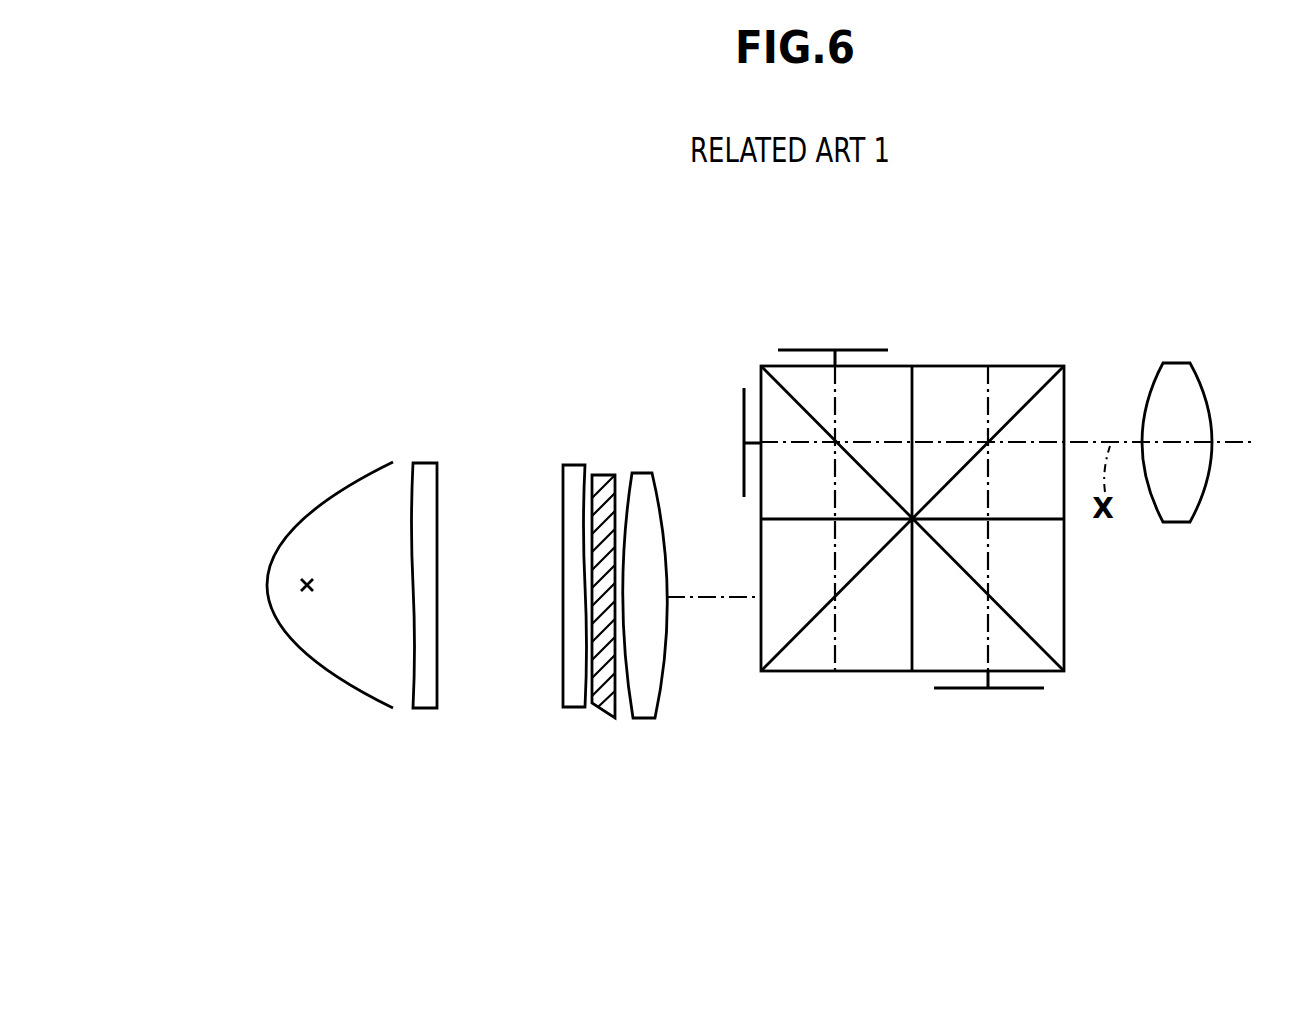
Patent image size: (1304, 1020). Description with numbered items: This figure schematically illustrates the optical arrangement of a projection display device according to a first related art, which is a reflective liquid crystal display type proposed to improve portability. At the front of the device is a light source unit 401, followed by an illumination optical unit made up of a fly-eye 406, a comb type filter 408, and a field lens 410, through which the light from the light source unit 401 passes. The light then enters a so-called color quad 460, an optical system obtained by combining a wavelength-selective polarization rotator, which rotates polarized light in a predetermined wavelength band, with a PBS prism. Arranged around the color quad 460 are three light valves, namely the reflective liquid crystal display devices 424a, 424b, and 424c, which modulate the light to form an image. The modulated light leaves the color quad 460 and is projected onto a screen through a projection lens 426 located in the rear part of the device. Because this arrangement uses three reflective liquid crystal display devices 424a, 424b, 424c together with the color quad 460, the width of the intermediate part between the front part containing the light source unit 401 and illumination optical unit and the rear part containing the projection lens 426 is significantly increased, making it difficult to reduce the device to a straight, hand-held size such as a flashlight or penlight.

The light source unit 401 is at (288, 672).
The fly-eye 406 is at (405, 442).
The comb type filter 408 is at (605, 700).
The field lens 410 is at (642, 713).
The reflective liquid crystal display device 424a is at (1015, 688).
The reflective liquid crystal display device 424b is at (743, 405).
The reflective liquid crystal display device 424c is at (870, 350).
The projection lens 426 is at (1266, 336).
The color quad 460 is at (1095, 629).